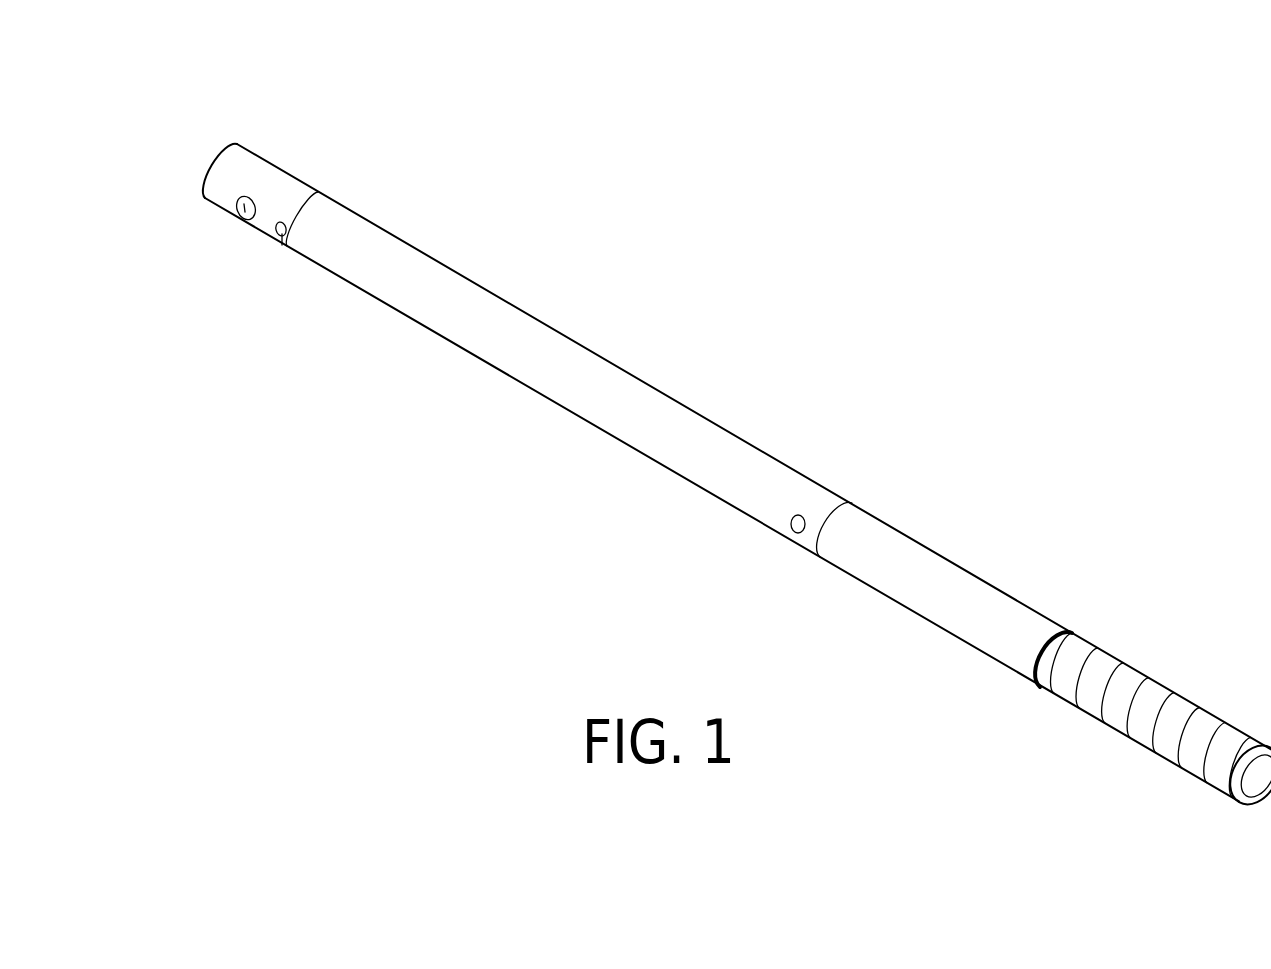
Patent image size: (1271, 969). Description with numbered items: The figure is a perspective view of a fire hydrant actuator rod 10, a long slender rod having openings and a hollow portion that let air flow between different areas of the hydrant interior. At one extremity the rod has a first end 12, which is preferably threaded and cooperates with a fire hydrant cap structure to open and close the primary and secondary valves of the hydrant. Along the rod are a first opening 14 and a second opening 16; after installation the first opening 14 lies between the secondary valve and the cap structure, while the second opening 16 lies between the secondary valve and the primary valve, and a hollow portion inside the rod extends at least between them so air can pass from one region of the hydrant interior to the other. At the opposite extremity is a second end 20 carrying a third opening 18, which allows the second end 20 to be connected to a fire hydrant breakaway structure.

The fire hydrant actuator rod 10 is at (906, 170).
The first end 12 is at (1095, 703).
The first opening 14 is at (794, 534).
The second opening 16 is at (282, 245).
The third opening 18 is at (240, 219).
The second end 20 is at (263, 173).